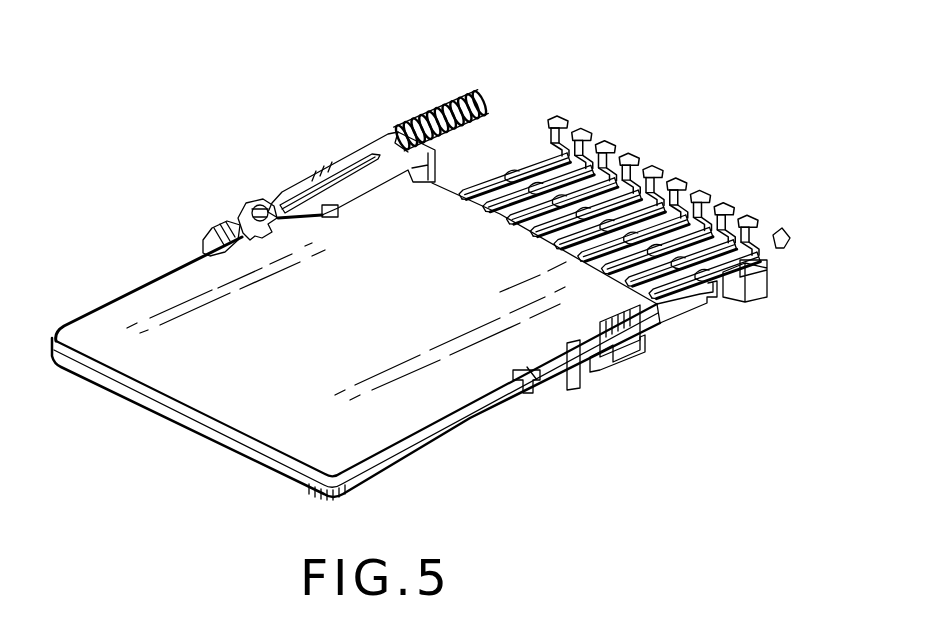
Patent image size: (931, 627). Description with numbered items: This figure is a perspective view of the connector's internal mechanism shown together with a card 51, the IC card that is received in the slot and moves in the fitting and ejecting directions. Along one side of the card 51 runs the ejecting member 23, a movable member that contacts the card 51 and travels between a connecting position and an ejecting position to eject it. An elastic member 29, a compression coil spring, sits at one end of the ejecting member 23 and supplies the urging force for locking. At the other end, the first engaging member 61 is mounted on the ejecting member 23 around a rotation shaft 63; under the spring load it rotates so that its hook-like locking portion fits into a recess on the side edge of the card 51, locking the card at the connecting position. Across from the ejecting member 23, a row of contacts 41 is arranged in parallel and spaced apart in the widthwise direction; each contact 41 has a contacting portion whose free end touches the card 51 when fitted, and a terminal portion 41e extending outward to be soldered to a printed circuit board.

The ejecting member 23 is at (329, 163).
The elastic member 29 is at (438, 105).
The contact 41 is at (522, 153).
The terminal portion 41e is at (657, 163).
The card 51 is at (150, 405).
The first engaging member 61 is at (247, 222).
The rotation shaft 63 is at (254, 205).